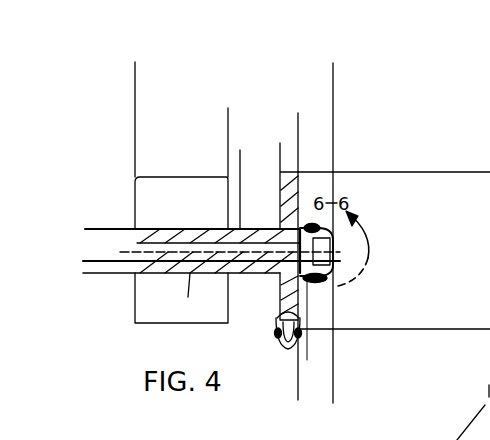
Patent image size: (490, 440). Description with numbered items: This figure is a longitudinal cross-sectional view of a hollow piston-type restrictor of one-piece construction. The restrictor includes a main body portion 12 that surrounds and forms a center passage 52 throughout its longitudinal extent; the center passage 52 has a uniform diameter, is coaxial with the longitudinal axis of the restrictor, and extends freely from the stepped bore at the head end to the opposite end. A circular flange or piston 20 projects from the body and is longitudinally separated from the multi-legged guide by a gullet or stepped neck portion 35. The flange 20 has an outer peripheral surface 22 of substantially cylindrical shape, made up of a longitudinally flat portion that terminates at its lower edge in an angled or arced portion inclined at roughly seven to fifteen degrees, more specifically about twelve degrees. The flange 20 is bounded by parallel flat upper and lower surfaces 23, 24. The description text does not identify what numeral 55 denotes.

The main body portion 12 is at (240, 268).
The center passage 52 is at (240, 150).
The stepped neck portion 35 is at (255, 178).
The flange 20 is at (295, 172).
The outer peripheral surface 22 is at (284, 172).
The upper surface 23 is at (292, 204).
The lower surface 24 is at (277, 297).
The retaining clip 55 is at (287, 344).